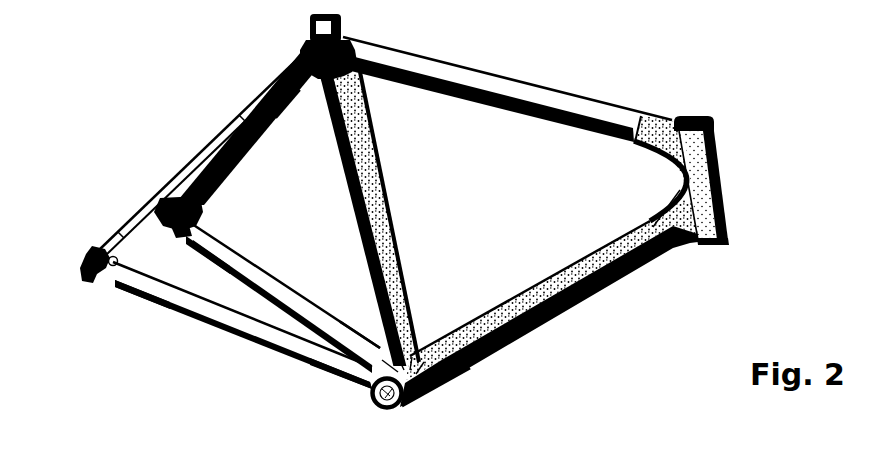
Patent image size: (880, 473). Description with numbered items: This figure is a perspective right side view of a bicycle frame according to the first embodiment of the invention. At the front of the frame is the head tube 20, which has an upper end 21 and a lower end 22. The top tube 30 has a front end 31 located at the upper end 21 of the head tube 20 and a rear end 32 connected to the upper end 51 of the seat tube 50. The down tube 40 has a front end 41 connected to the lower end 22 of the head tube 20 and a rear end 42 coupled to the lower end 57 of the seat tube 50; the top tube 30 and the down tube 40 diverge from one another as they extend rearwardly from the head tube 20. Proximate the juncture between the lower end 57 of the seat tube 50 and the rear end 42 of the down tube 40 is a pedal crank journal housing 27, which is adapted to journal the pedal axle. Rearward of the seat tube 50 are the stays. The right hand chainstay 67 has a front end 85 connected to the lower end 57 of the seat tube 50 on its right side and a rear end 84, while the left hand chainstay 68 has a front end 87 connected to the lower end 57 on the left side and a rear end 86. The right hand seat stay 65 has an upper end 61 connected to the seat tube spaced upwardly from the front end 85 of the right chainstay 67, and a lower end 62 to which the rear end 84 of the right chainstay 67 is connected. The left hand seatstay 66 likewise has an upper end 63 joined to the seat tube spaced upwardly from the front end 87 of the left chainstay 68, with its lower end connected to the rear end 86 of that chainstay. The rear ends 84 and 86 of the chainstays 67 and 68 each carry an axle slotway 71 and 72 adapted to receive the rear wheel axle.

The head tube 20 is at (727, 180).
The upper end of head tube 21 is at (715, 130).
The lower end of head tube 22 is at (740, 228).
The pedal crank journal housing 27 is at (405, 409).
The top tube 30 is at (495, 75).
The front end of top tube 31 is at (633, 107).
The rear end of top tube 32 is at (380, 42).
The down tube 40 is at (558, 311).
The front end of down tube 41 is at (660, 250).
The rear end of down tube 42 is at (453, 377).
The seat tube 50 is at (382, 220).
The upper end of seat tube 51 is at (365, 110).
The lower end of seat tube 57 is at (406, 308).
The upper end of right hand seatstay 61 is at (262, 95).
The lower end of seatstay 62 is at (203, 203).
The upper end of left hand seatstay 63 is at (283, 113).
The right hand seat stay 65 is at (192, 160).
The left hand seatstay 66 is at (237, 170).
The right hand chainstay 67 is at (230, 334).
The left hand chainstay 68 is at (255, 268).
The axle slotway 71 is at (77, 274).
The axle slotway 72 is at (178, 231).
The rear end of right hand chainstay 84 is at (148, 295).
The front end of right hand chainstay 85 is at (333, 375).
The rear end of left hand chainstay 86 is at (198, 232).
The front end of left hand chainstay 87 is at (355, 327).